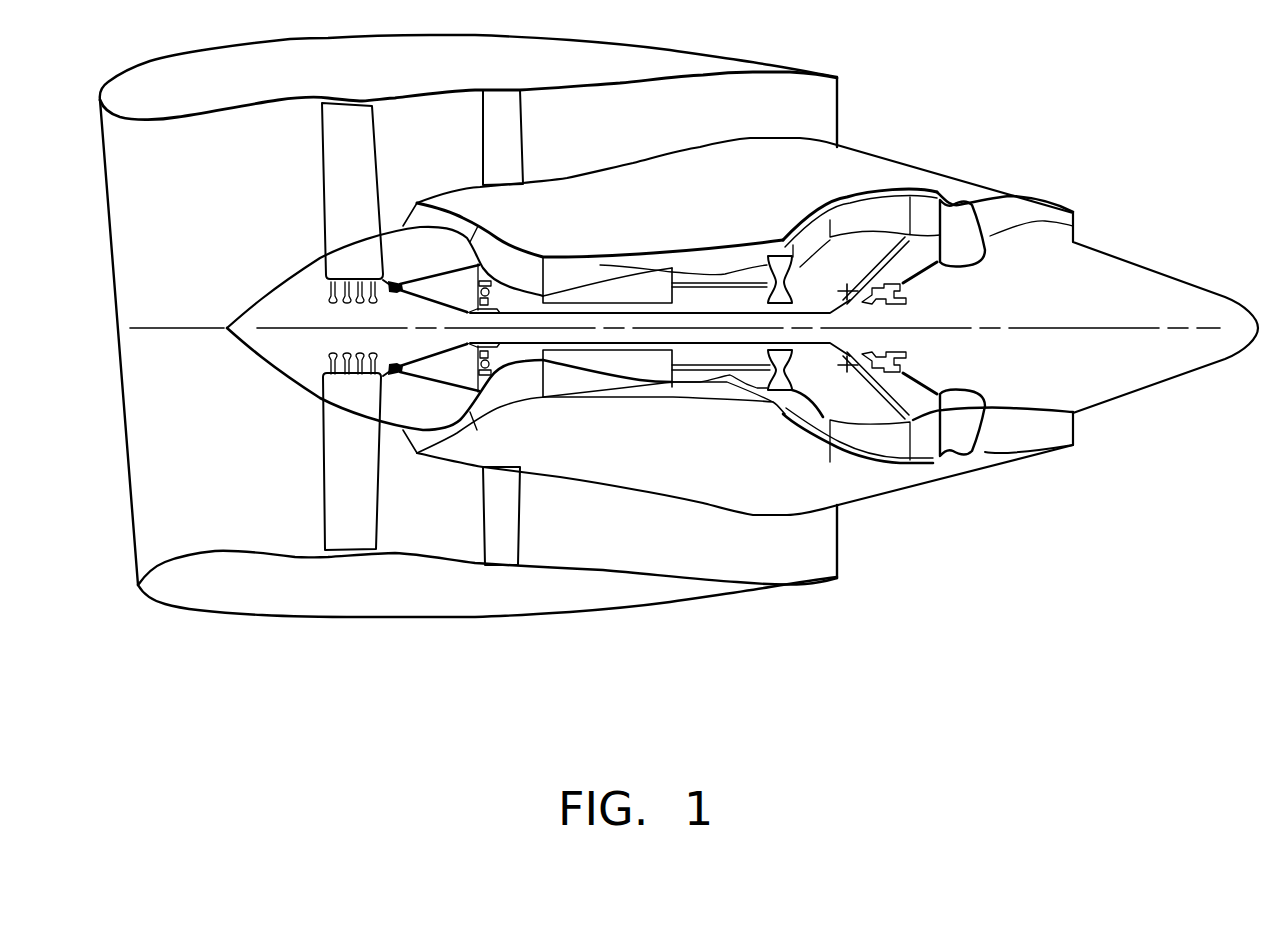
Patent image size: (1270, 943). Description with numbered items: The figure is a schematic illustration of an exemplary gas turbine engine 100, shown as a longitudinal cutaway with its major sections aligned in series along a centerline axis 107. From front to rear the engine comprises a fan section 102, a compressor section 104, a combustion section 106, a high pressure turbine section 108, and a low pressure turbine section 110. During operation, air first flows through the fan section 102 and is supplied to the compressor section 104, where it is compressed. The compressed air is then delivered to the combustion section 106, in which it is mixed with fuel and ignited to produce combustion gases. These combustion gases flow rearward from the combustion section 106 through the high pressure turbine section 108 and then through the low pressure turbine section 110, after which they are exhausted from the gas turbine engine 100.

The gas turbine engine 100 is at (679, 326).
The fan section 102 is at (300, 187).
The compressor section 104 is at (470, 215).
The combustion section 106 is at (720, 243).
The centerline axis 107 is at (1093, 325).
The high pressure turbine section 108 is at (843, 203).
The low pressure turbine section 110 is at (897, 153).